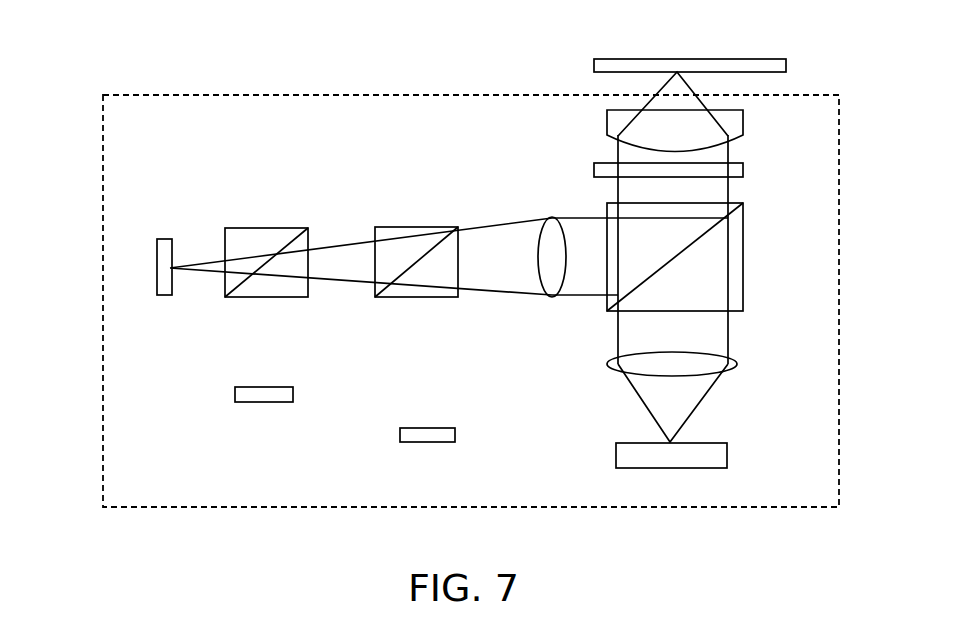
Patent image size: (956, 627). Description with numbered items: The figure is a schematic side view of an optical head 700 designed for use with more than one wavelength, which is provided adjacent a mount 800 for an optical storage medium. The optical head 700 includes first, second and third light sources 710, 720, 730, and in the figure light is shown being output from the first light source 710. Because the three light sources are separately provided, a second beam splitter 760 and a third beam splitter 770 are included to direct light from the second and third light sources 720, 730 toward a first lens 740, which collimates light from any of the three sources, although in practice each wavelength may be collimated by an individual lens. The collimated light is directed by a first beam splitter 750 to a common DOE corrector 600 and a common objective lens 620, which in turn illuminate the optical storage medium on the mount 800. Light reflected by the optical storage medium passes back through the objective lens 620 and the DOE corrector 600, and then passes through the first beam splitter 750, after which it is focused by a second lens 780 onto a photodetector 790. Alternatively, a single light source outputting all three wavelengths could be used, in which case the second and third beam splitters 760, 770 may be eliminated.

The optical head 700 is at (101, 186).
The first light source 710 is at (156, 300).
The second light source 720 is at (258, 406).
The third light source 730 is at (429, 446).
The first lens 740 is at (539, 289).
The first beam splitter 750 is at (748, 270).
The second beam splitter 760 is at (280, 299).
The third beam splitter 770 is at (416, 300).
The second lens 780 is at (733, 362).
The photodetector 790 is at (730, 473).
The DOE corrector 600 is at (592, 166).
The objective lens 620 is at (605, 130).
The mount 800 is at (753, 57).